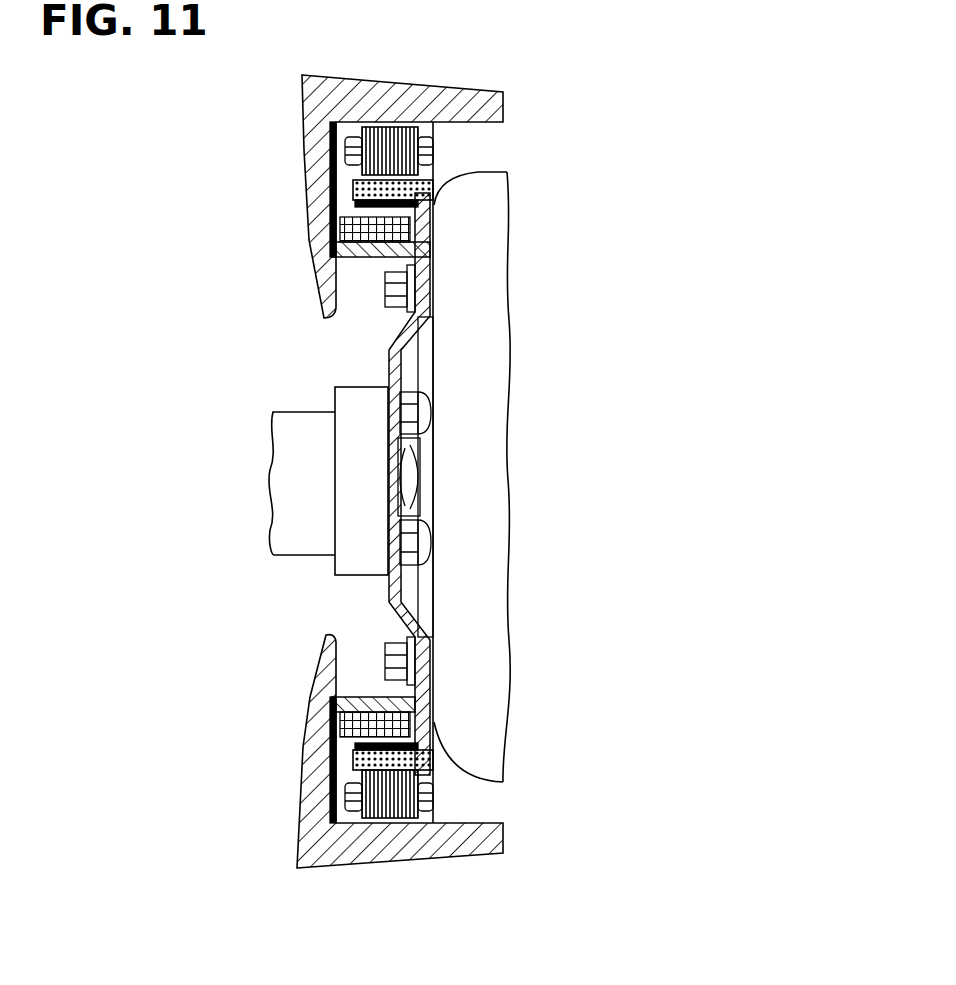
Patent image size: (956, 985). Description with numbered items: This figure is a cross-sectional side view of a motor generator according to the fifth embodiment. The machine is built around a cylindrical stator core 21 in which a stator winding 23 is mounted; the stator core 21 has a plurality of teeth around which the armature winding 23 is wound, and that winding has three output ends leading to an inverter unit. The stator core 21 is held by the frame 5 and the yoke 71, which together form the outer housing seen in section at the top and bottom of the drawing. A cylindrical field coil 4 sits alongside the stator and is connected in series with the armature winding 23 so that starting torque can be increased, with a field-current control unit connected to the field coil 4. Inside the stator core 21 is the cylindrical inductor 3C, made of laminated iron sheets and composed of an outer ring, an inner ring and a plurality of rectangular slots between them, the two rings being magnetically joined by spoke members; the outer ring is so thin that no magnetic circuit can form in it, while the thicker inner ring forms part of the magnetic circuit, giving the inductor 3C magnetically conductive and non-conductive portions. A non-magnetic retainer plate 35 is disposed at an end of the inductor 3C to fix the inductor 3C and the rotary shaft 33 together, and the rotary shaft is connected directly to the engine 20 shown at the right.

The frame 5 is at (307, 112).
The yoke 71 is at (330, 173).
The field coil 4 is at (330, 237).
The stator core 21 is at (437, 132).
The stator winding 23 is at (437, 148).
The inductor 3C is at (433, 200).
The non-magnetic retainer plate 35 is at (433, 237).
The engine 20 is at (483, 316).
The rotary shaft 33 is at (313, 427).